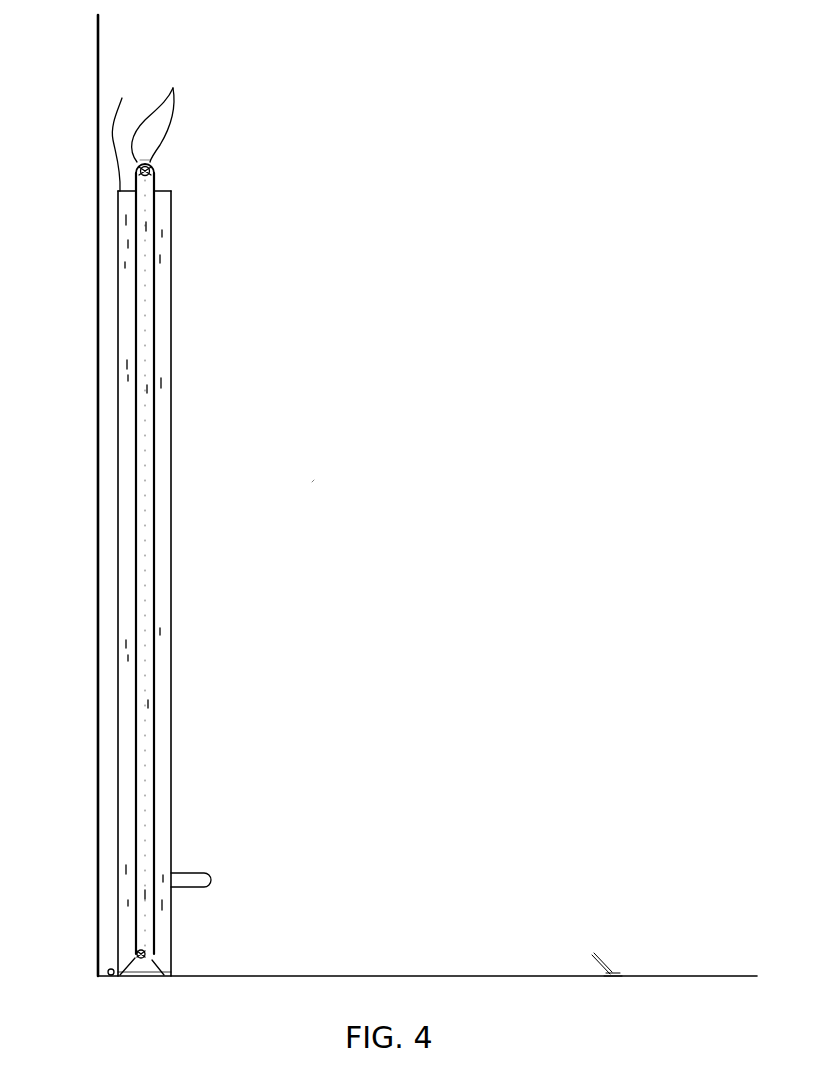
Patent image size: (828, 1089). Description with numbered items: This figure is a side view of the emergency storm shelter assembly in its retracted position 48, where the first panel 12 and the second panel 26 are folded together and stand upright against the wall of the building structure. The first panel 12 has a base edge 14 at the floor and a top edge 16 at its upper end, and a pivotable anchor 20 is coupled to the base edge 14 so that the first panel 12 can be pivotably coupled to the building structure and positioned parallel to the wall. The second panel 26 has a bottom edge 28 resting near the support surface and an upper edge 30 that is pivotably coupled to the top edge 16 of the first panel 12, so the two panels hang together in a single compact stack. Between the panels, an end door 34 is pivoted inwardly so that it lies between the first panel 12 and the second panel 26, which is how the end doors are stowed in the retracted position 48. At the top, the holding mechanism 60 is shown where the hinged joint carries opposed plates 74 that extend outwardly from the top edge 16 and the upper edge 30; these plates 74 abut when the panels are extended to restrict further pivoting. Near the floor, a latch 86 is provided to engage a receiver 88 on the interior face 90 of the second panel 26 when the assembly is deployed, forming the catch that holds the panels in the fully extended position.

The first panel 12 is at (127, 527).
The base edge 14 is at (130, 976).
The top edge 16 is at (124, 132).
The pivotable anchor 20 is at (106, 974).
The second panel 26 is at (160, 382).
The bottom edge 28 is at (160, 976).
The upper edge 30 is at (173, 187).
The end door 34 is at (142, 650).
The retracted position 48 is at (318, 477).
The holding mechanism 60 is at (186, 148).
The opposed plates 74 is at (158, 111).
The latch 86 is at (143, 972).
The receiver 88 is at (607, 967).
The interior face 90 is at (139, 947).